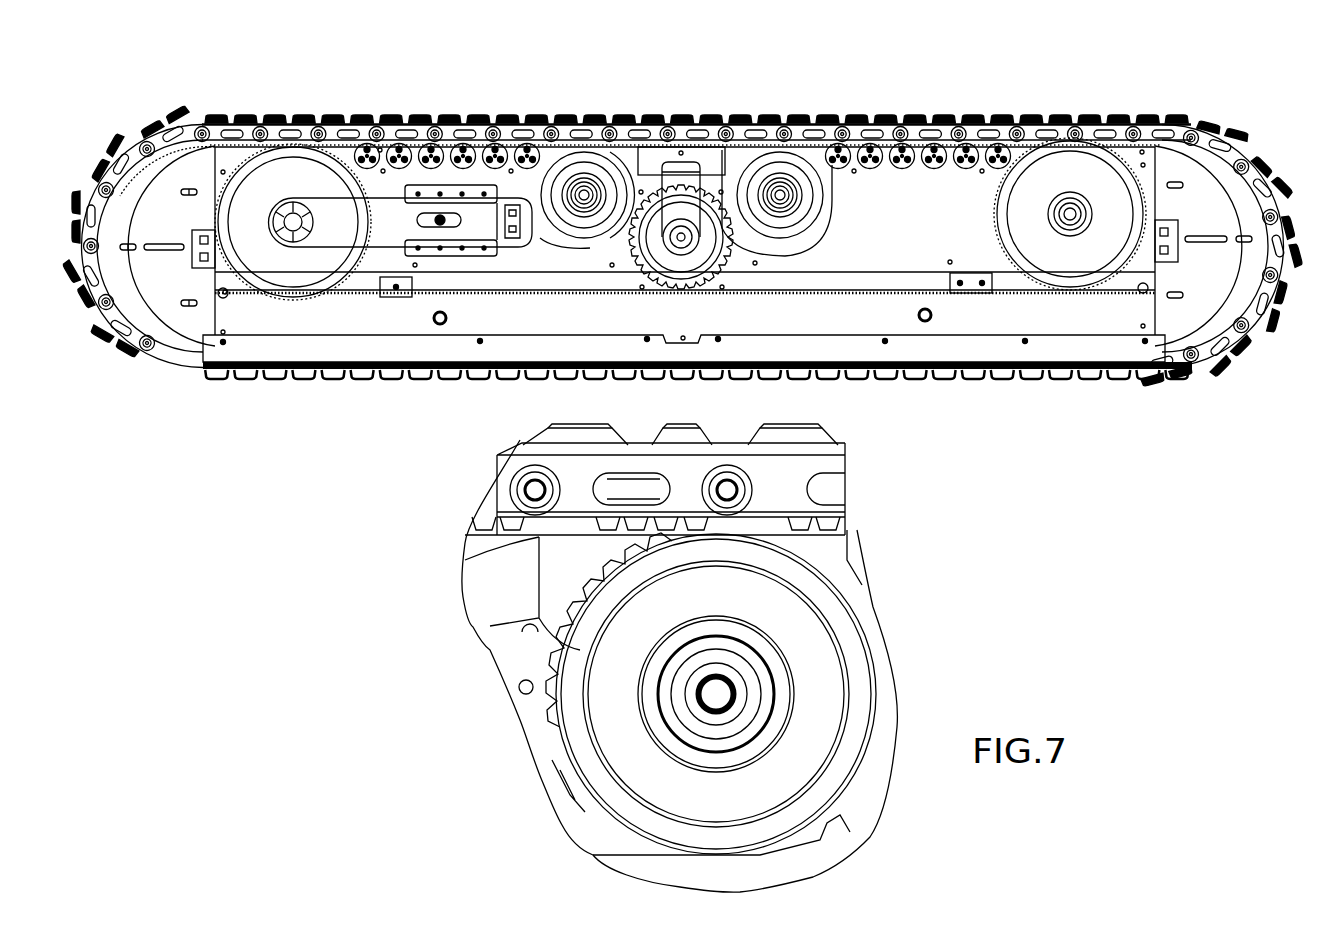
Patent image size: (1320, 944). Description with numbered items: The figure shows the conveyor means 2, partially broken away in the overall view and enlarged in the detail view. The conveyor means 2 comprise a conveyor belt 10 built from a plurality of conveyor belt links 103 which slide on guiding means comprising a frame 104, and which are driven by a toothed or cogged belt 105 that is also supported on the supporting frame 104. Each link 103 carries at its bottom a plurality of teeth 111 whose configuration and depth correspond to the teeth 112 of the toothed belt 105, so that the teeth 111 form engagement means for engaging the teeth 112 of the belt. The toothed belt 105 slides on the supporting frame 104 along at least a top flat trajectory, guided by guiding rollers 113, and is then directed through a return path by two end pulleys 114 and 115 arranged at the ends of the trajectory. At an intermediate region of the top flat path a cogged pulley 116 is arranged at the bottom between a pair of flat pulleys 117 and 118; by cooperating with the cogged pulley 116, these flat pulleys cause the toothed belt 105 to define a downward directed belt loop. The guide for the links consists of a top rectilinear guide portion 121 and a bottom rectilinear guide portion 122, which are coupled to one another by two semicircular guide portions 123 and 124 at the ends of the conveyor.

In FIG. 6, the conveyor means 2 is at (1151, 397).
In FIG. 6, the conveyor belt 10 is at (520, 117).
In FIG. 7, the conveyor belt links 103 is at (583, 497).
In FIG. 6, the frame 104 is at (322, 326).
In FIG. 7, the toothed or cogged belt 105 is at (560, 720).
In FIG. 7, the teeth 111 is at (650, 528).
In FIG. 7, the teeth 112 is at (527, 634).
In FIG. 6, the guiding rollers 113 is at (978, 128).
In FIG. 6, the end pulley 114 is at (296, 180).
In FIG. 6, the end pulley 115 is at (1090, 160).
In FIG. 6, the cogged pulley 116 is at (822, 142).
In FIG. 6, the flat pulley 117 is at (598, 162).
In FIG. 6, the flat pulley 118 is at (805, 158).
In FIG. 7, the flat pulley 118 is at (832, 677).
In FIG. 6, the top rectilinear guide portion 121 is at (221, 118).
In FIG. 6, the bottom rectilinear guide portion 122 is at (275, 368).
In FIG. 6, the semicircular guide portion 123 is at (150, 303).
In FIG. 6, the semicircular guide portion 124 is at (1218, 298).